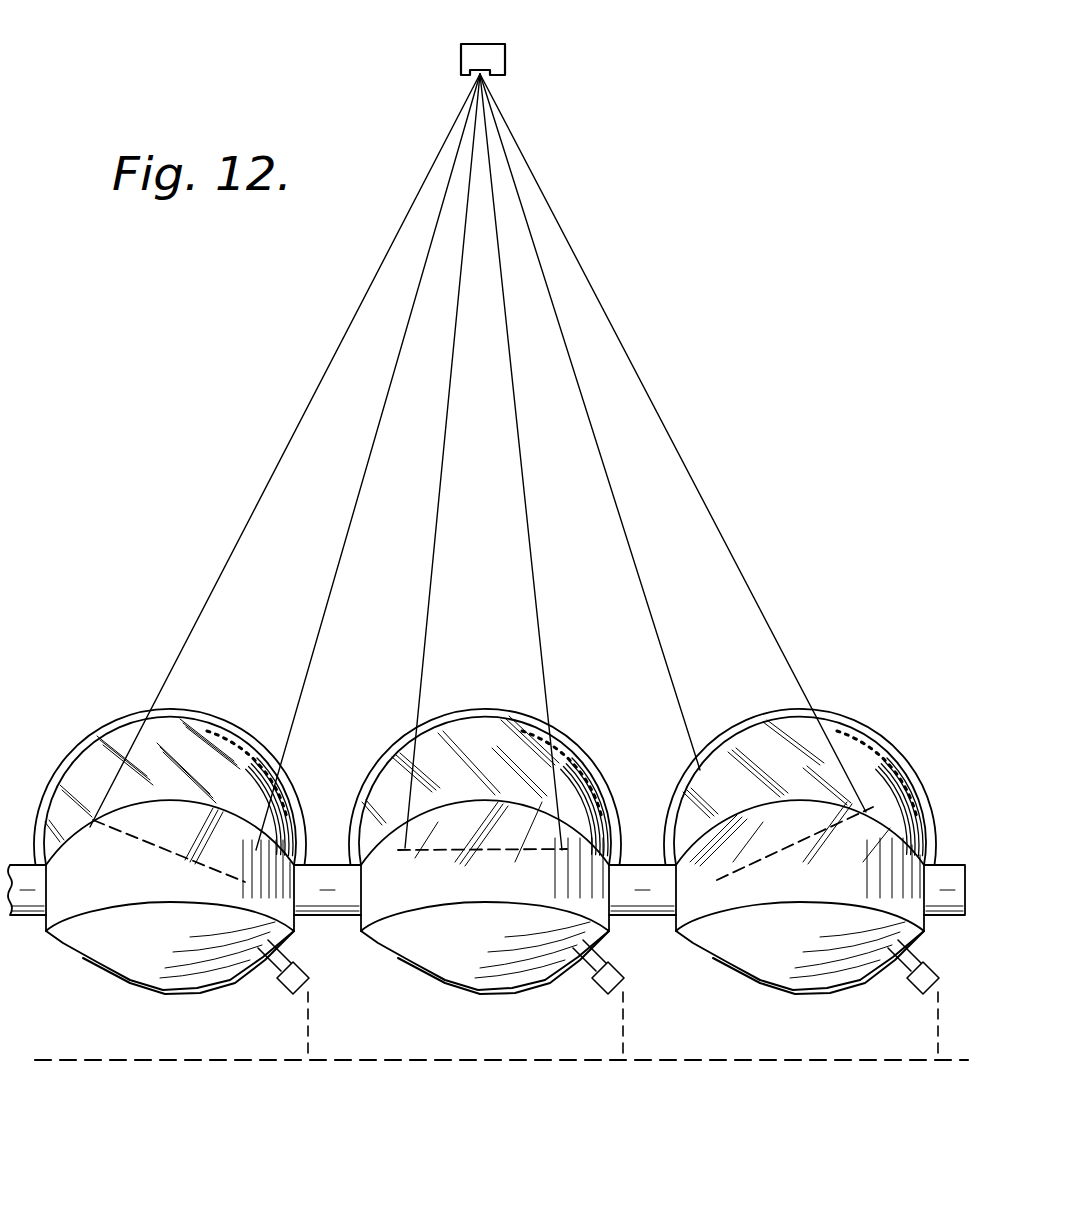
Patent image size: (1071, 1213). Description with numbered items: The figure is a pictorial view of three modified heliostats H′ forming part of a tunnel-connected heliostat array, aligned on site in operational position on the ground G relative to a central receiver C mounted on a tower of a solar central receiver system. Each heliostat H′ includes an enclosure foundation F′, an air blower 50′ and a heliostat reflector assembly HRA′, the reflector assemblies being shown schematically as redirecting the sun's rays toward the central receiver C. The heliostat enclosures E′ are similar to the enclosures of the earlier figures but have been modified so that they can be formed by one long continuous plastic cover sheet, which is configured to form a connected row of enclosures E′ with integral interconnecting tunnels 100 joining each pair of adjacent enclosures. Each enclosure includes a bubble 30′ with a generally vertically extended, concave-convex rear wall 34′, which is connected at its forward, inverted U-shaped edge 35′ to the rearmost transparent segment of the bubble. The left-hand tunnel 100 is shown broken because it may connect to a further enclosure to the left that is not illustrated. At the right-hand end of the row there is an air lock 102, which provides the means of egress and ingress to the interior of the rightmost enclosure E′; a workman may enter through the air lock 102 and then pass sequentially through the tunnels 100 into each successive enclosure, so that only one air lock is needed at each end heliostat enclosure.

The central receiver C is at (500, 47).
The modified heliostat H′ is at (77, 738).
The enclosure foundation F′ is at (182, 716).
The heliostat enclosure E′ is at (242, 736).
The bubble 30′ is at (245, 777).
The forward inverted U-shaped edge 35′ is at (147, 905).
The rear wall 34′ is at (100, 947).
The air blower 50′ is at (280, 992).
The interconnecting tunnel 100 is at (322, 857).
The air lock 102 is at (947, 857).
The heliostat reflector assembly HRA′ is at (475, 852).
The ground G is at (108, 1047).